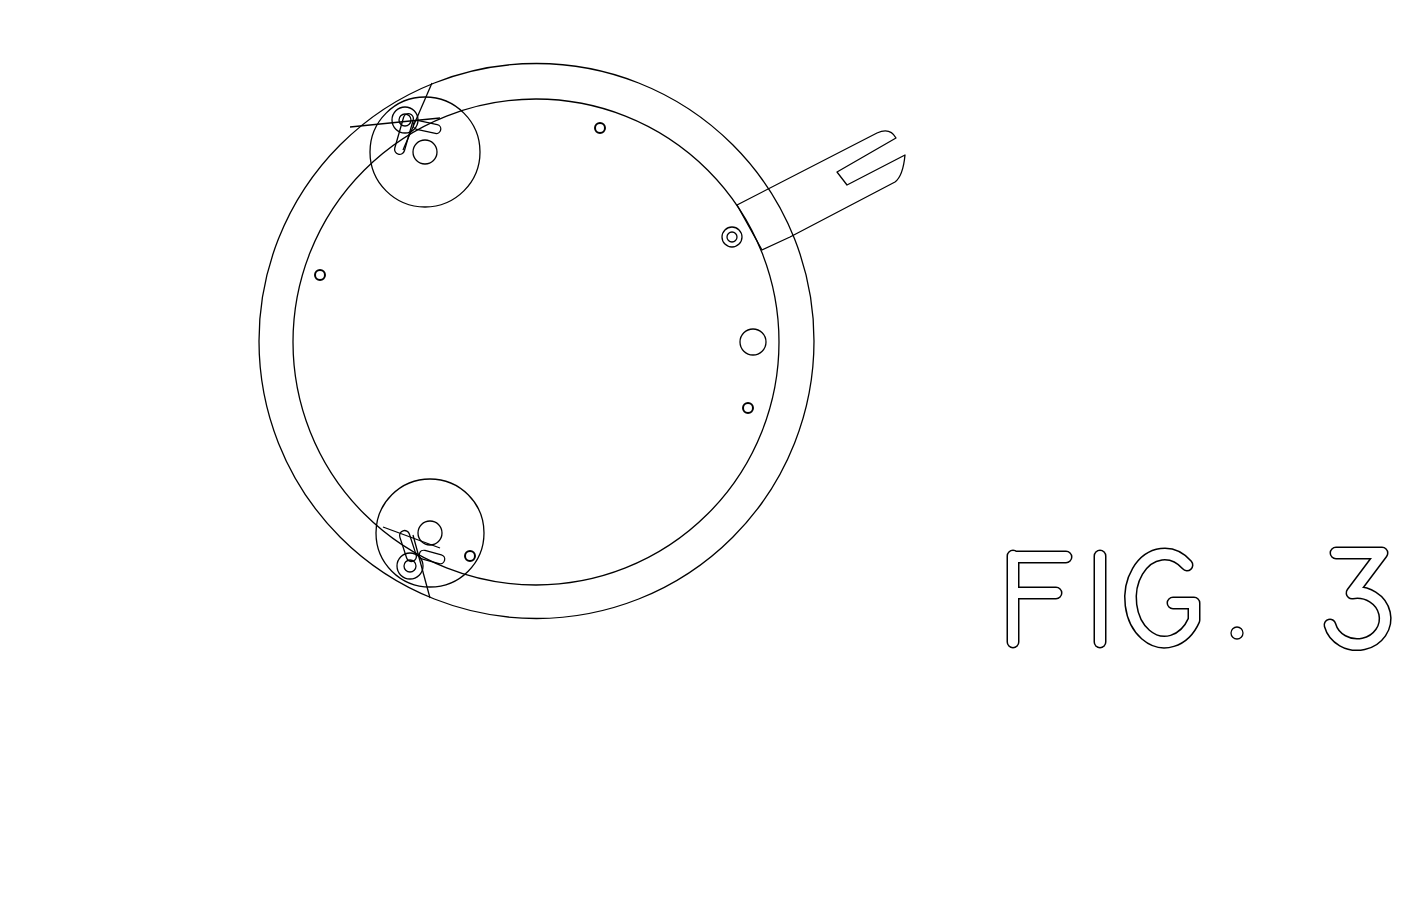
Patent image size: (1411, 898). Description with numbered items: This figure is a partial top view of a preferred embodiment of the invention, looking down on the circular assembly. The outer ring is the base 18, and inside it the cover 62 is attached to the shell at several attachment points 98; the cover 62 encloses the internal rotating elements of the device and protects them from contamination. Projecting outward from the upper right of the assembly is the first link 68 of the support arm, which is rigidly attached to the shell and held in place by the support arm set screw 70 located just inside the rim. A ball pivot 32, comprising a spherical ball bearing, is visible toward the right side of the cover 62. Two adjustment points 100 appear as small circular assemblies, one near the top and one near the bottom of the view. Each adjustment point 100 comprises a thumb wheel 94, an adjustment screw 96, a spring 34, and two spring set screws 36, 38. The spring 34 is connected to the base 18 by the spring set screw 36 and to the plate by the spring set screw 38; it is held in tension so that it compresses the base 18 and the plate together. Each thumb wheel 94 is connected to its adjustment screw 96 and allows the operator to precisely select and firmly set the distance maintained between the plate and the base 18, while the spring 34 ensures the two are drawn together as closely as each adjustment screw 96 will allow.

The base 18 is at (802, 421).
The cover 62 is at (293, 332).
The first link 68 is at (847, 207).
The support arm set screw 70 is at (742, 243).
The ball pivot 32 is at (766, 342).
The attachment points 98 is at (316, 272).
The adjustment points 100 is at (425, 153).
The thumb wheel 94 is at (485, 537).
The adjustment screw 96 is at (443, 538).
The spring set screw 38 is at (410, 551).
The spring 34 is at (396, 577).
The spring set screw 36 is at (433, 557).